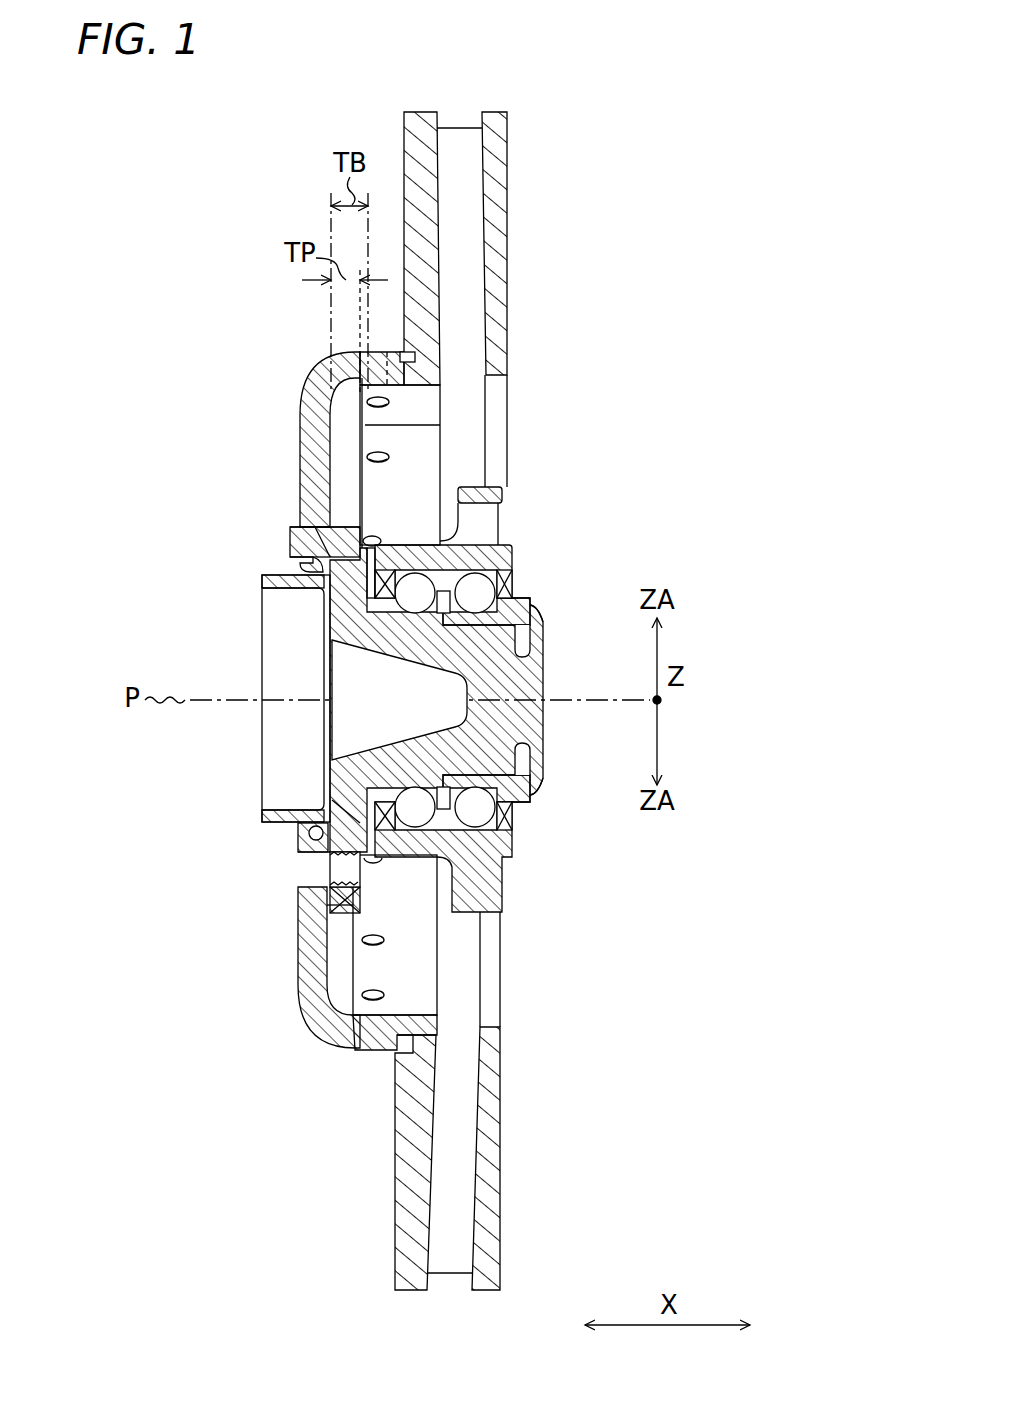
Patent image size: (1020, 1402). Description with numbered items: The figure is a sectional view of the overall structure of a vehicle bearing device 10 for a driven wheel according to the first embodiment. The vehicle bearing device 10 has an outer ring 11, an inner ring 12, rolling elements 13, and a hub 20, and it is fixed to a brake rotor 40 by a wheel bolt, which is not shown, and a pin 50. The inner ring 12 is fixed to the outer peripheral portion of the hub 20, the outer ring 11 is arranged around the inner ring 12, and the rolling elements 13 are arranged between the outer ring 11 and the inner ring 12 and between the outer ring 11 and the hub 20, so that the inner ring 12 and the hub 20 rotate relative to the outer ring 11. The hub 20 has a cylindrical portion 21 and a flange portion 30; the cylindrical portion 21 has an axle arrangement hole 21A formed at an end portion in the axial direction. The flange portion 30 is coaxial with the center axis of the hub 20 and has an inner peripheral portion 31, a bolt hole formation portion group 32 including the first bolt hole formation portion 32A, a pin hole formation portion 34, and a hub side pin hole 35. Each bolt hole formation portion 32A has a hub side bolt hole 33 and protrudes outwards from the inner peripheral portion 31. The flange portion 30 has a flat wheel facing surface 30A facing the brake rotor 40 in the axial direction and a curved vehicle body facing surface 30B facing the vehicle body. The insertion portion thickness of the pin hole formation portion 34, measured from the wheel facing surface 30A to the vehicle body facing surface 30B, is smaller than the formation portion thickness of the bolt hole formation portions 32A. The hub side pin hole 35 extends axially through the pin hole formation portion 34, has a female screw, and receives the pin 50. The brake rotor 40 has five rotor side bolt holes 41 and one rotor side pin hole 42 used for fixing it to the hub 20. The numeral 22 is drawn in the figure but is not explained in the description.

The vehicle bearing device 10 is at (598, 530).
The outer ring 11 is at (505, 840).
The inner ring 12 is at (522, 790).
The rolling elements 13 is at (472, 598).
The hub 20 is at (522, 604).
The cylindrical portion 21 is at (540, 621).
The axle arrangement hole 21A is at (538, 652).
The flange portion 22 is at (300, 860).
The flange portion 30 is at (350, 900).
The wheel facing surface 30A is at (323, 820).
The vehicle body facing surface 30B is at (365, 894).
The inner peripheral portion 31 is at (305, 570).
The bolt hole formation portion group 32 is at (215, 973).
The first bolt hole formation portion 32A is at (345, 900).
The hub side bolt hole 33 is at (328, 880).
The pin hole formation portion 34 is at (365, 545).
The hub side pin hole 35 is at (322, 528).
The brake rotor 40 is at (418, 112).
The rotor side bolt hole 41 is at (298, 850).
The rotor side pin hole 42 is at (290, 530).
The pin 50 is at (290, 548).